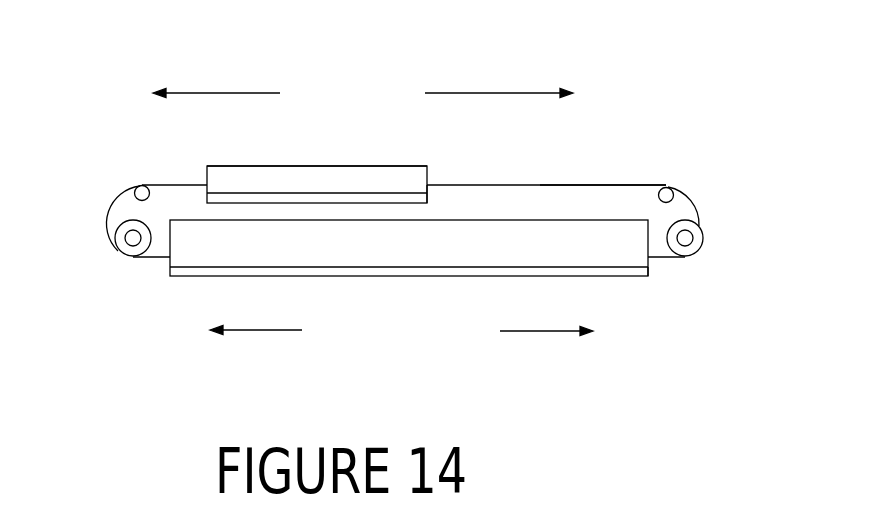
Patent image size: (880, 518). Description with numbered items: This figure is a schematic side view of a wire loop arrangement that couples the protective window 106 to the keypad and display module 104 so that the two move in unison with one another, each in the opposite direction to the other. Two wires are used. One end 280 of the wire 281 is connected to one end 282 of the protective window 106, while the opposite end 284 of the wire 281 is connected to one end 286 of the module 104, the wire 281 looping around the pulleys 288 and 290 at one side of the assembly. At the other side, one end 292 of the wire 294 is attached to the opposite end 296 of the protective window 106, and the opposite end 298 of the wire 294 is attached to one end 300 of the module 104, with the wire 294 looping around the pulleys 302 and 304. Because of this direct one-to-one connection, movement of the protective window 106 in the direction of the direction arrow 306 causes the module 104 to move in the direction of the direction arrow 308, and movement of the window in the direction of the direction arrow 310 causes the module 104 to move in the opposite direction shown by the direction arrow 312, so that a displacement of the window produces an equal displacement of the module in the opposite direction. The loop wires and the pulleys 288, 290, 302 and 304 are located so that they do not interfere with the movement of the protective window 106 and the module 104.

The module 104 is at (570, 272).
The protective window 106 is at (373, 166).
The one end of the wire 280 is at (428, 182).
The wire 281 is at (575, 183).
The one end of the protective window 282 is at (428, 199).
The opposite end of the wire 284 is at (667, 262).
The one end of the module 286 is at (653, 277).
The pulley 288 is at (668, 190).
The pulley 290 is at (687, 229).
The one end of the wire 292 is at (207, 166).
The wire 294 is at (162, 184).
The opposite end of the protective window 296 is at (205, 197).
The opposite end of the wire 298 is at (158, 261).
The one end of the module 300 is at (168, 270).
The pulley 302 is at (137, 190).
The pulley 304 is at (128, 252).
The direction arrow 306 is at (482, 93).
The direction arrow 308 is at (245, 332).
The direction arrow 310 is at (192, 93).
The direction arrow 312 is at (537, 332).